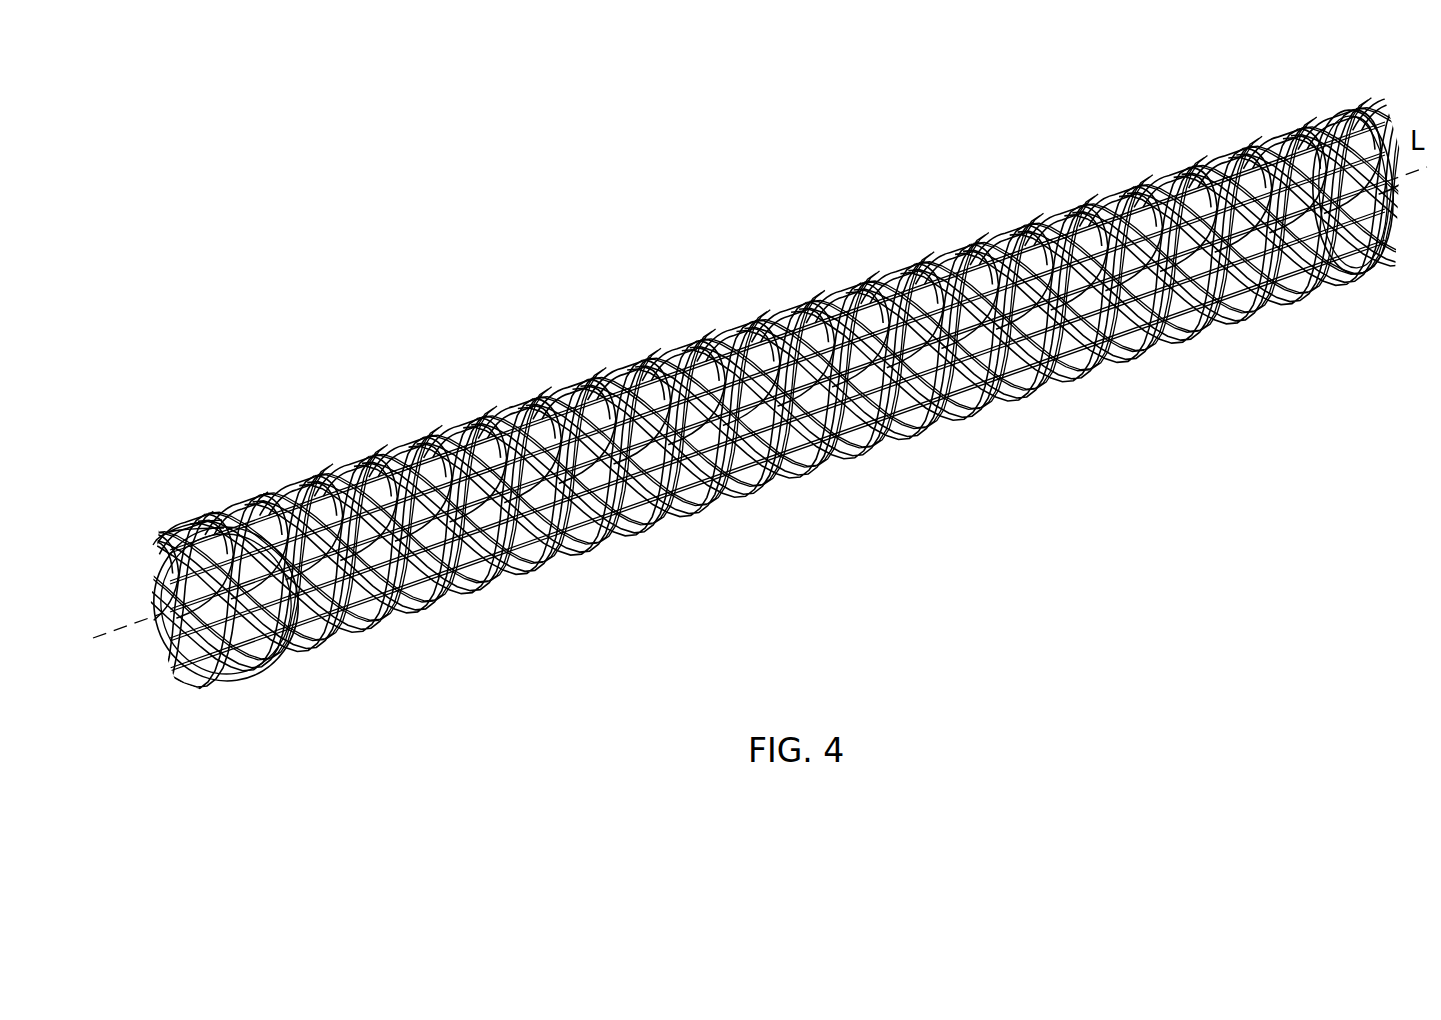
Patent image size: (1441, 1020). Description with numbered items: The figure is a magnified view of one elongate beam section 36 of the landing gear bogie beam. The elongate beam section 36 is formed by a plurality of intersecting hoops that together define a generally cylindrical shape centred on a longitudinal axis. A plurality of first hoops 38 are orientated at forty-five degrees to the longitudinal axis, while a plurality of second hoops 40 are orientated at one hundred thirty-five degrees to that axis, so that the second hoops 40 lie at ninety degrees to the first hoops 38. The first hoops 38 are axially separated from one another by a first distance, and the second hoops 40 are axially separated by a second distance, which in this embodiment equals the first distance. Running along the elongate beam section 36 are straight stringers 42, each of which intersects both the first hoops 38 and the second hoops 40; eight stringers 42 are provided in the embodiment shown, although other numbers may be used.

The elongate beam section 36 is at (676, 287).
The first hoops 38 is at (184, 690).
The second hoops 40 is at (152, 538).
The stringer 42 is at (889, 446).